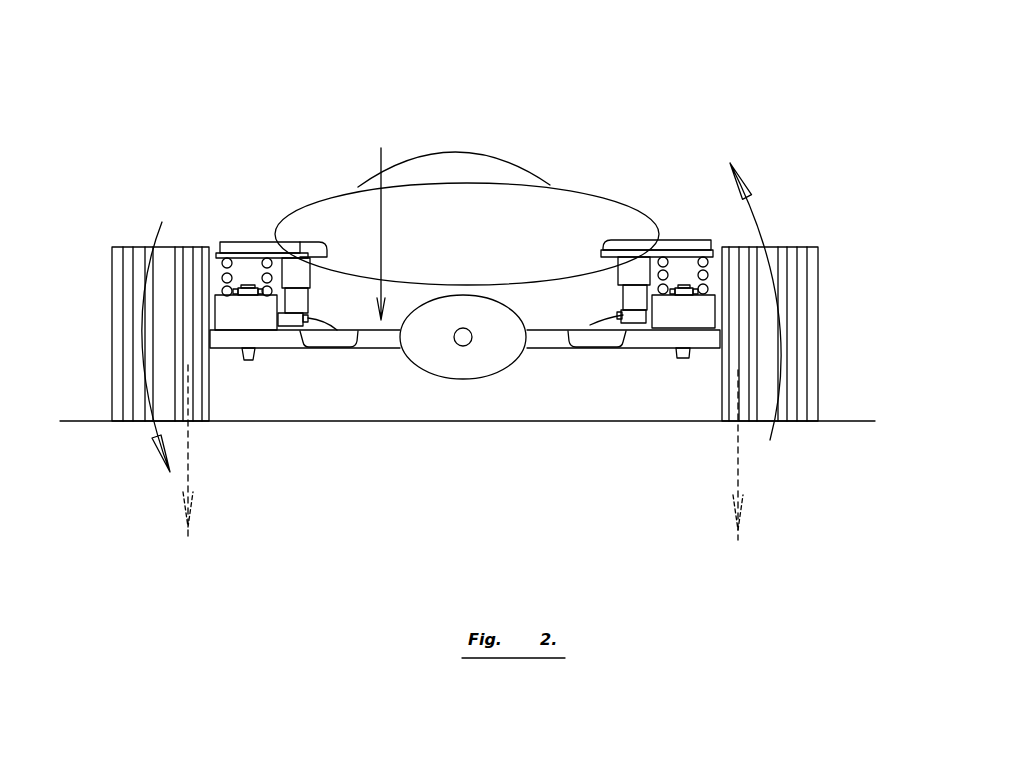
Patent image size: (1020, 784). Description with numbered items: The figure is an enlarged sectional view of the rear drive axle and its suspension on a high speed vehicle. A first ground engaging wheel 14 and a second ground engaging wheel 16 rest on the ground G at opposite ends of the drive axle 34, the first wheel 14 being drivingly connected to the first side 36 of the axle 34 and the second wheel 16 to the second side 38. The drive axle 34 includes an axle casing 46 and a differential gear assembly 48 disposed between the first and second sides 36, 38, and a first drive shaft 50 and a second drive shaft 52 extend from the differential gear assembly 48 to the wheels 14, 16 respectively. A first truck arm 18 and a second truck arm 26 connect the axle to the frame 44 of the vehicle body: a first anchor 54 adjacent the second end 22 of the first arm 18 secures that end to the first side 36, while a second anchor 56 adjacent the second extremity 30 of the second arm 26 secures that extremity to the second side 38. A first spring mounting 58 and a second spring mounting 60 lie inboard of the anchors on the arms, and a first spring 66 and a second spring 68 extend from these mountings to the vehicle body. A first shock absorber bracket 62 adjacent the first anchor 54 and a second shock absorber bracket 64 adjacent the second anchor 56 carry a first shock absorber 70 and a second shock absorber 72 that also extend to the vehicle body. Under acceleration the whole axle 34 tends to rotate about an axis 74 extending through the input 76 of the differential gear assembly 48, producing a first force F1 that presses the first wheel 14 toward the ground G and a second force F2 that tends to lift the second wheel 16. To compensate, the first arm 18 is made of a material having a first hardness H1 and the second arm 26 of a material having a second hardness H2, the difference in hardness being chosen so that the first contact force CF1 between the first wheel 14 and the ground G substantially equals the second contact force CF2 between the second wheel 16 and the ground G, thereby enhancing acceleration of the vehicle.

The first ground engaging wheel 14 is at (125, 335).
The second ground engaging wheel 16 is at (805, 373).
The first truck arm 18 is at (237, 318).
The second end of first arm 22 is at (243, 305).
The second truck arm 26 is at (678, 315).
The second extremity of second arm 30 is at (707, 307).
The drive axle 34 is at (383, 220).
The first side of axle 36 is at (207, 330).
The second side of axle 38 is at (722, 340).
The frame 44 is at (252, 245).
The axle casing 46 is at (550, 333).
The differential gear assembly 48 is at (460, 310).
The first drive shaft 50 is at (323, 342).
The second drive shaft 52 is at (578, 343).
The first anchor 54 is at (255, 352).
The second anchor 56 is at (680, 358).
The first spring mounting 58 is at (258, 288).
The second spring mounting 60 is at (645, 320).
The first shock absorber bracket 62 is at (345, 345).
The second shock absorber bracket 64 is at (583, 333).
The first spring 66 is at (220, 288).
The second spring 68 is at (660, 268).
The first shock absorber 70 is at (288, 272).
The second shock absorber 72 is at (627, 270).
The axis 74 is at (462, 342).
The input of differential gear assembly 76 is at (470, 330).
The first force F1 is at (150, 434).
The second force F2 is at (770, 442).
The first contact force CF1 is at (190, 463).
The second contact force CF2 is at (737, 460).
The first hardness H1 is at (260, 315).
The second hardness H2 is at (625, 331).
The ground G is at (425, 422).